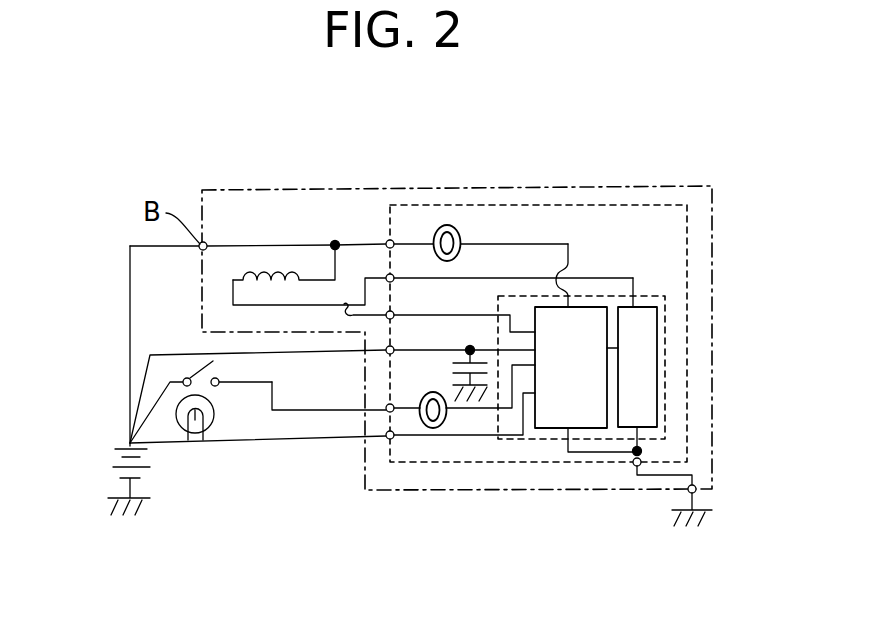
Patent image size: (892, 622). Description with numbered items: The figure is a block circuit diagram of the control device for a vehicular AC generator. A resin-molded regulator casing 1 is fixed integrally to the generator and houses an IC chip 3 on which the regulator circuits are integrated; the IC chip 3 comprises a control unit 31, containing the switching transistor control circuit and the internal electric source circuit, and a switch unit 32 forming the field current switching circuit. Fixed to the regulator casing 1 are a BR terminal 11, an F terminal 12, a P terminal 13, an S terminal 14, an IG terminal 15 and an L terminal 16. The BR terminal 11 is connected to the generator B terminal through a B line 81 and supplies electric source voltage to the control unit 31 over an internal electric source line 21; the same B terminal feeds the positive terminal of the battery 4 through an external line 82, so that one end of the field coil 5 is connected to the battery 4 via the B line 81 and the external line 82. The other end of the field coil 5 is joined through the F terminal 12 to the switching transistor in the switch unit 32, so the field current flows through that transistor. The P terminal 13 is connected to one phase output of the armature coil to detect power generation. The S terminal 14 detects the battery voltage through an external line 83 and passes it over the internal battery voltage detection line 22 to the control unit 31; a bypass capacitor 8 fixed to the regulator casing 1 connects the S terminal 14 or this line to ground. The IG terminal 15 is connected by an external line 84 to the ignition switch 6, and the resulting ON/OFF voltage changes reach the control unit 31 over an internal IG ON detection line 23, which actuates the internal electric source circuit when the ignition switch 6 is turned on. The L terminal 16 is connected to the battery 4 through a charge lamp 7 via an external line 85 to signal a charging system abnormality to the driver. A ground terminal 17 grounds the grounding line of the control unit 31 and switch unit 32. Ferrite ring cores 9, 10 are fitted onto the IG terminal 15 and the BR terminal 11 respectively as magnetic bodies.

The regulator casing 1 is at (663, 204).
The IC chip 3 is at (665, 296).
The control unit 31 is at (595, 407).
The switch unit 32 is at (648, 332).
The battery 4 is at (114, 449).
The field coil 5 is at (268, 272).
The ignition switch 6 is at (203, 372).
The charge lamp 7 is at (197, 444).
The bypass capacitor 8 is at (466, 412).
The ferrite ring core 9 is at (433, 429).
The ferrite ring core 10 is at (450, 226).
The BR terminal 11 is at (387, 243).
The F terminal 12 is at (387, 277).
The P terminal 13 is at (393, 314).
The S terminal 14 is at (368, 351).
The IG terminal 15 is at (381, 408).
The L terminal 16 is at (387, 438).
The ground terminal 17 is at (634, 454).
The internal electric source line 21 is at (534, 242).
The internal battery voltage detection line 22 is at (442, 350).
The internal IG ON detection line 23 is at (487, 364).
The B line 81 is at (238, 246).
The external line 82 is at (134, 245).
The external line 83 is at (167, 355).
The external line 84 is at (240, 442).
The external line 85 is at (271, 445).